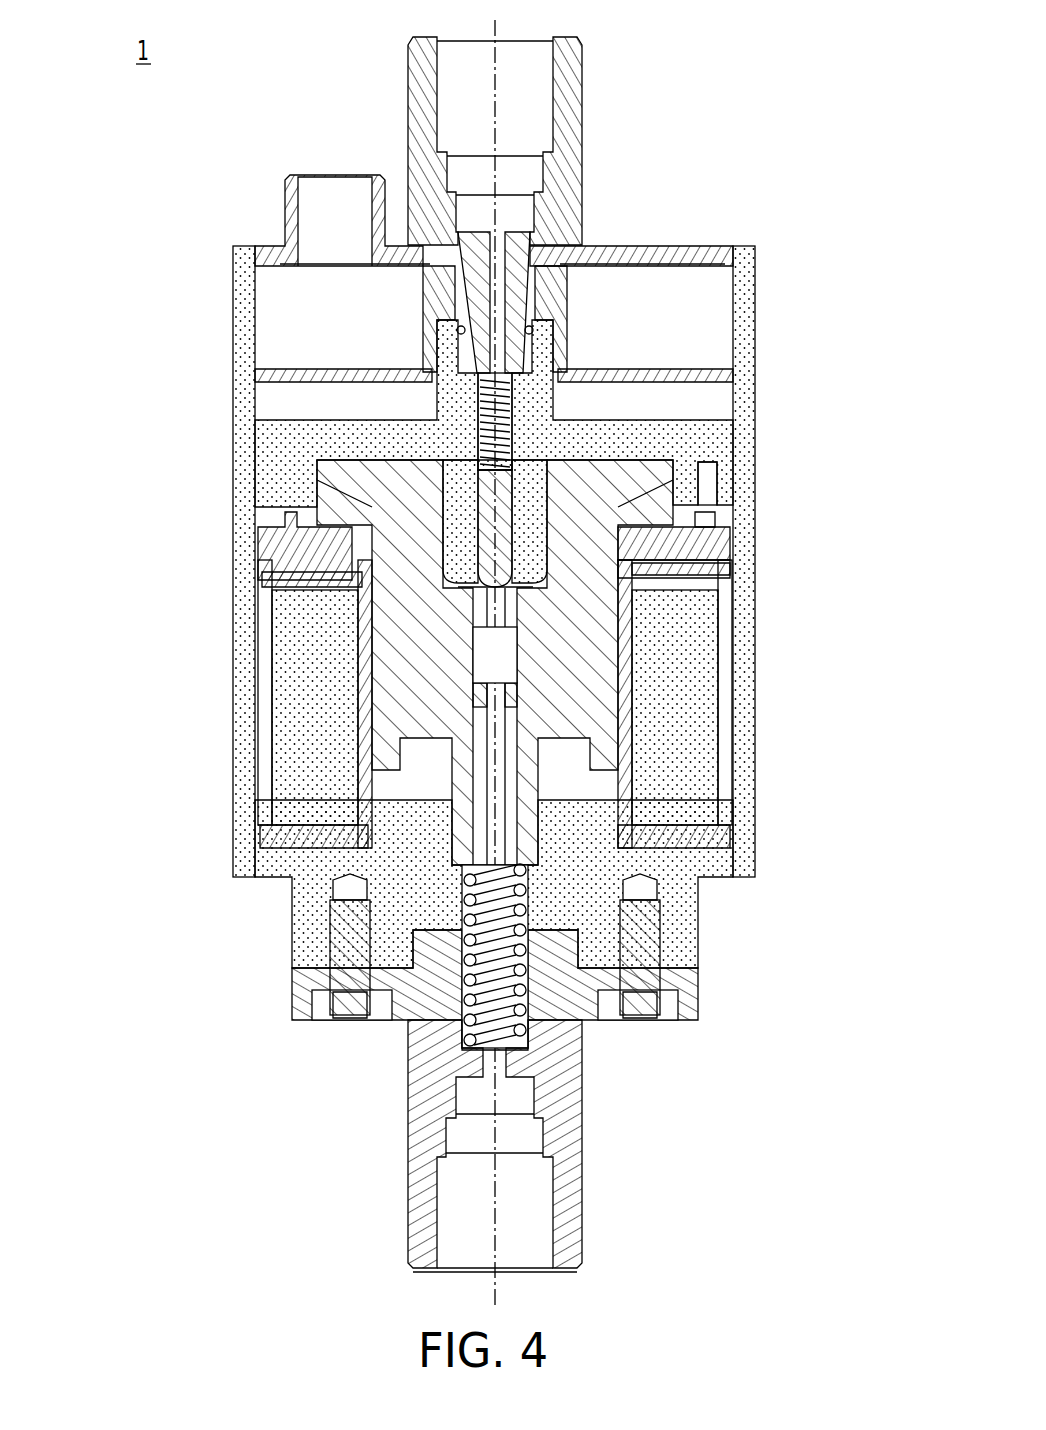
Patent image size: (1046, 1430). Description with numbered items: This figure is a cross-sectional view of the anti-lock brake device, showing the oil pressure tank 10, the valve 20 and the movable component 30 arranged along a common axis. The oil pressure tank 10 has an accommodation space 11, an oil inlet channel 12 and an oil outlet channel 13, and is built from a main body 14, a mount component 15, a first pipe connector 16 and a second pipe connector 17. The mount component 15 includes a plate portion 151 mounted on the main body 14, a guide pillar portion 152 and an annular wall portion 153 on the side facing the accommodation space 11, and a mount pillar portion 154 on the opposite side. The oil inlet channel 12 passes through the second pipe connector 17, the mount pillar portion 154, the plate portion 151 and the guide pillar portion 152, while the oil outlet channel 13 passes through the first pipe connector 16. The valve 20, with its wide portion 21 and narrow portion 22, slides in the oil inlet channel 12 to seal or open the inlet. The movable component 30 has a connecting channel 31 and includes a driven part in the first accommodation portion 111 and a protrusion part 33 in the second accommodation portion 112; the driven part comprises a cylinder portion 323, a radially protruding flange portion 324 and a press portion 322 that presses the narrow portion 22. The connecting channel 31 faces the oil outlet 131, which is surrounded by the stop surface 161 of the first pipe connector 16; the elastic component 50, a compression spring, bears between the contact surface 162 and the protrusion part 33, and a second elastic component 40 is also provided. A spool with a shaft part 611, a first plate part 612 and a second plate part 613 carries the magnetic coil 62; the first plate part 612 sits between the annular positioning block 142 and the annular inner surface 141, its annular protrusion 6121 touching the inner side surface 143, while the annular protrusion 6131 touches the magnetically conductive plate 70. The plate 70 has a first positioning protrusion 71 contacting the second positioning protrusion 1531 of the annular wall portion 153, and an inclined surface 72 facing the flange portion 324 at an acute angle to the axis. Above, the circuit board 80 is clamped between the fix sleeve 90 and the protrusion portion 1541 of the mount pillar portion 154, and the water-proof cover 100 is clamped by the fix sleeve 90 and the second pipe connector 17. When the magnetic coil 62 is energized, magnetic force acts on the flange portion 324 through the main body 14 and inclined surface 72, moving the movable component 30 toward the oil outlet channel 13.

The oil pressure tank 10 is at (760, 308).
The accommodation space 11 is at (735, 713).
The oil inlet channel 12 is at (488, 294).
The oil outlet channel 13 is at (507, 1093).
The main body 14 is at (748, 678).
The mount component 15 is at (160, 283).
The first pipe connector 16 is at (575, 1200).
The second pipe connector 17 is at (572, 100).
The valve 20 is at (172, 525).
The wide portion 21 is at (300, 552).
The narrow portion 22 is at (300, 595).
The movable component 30 is at (390, 780).
The connecting channel 31 is at (512, 657).
The protrusion part 33 is at (465, 868).
The elastic component 40 is at (478, 410).
The elastic component 50 is at (475, 1030).
The magnetic coil 62 is at (705, 730).
The magnetically conductive plate 70 is at (690, 543).
The first positioning protrusion 71 is at (705, 518).
The inclined surface 72 is at (650, 527).
The circuit board 80 is at (688, 372).
The fix sleeve 90 is at (562, 310).
The water-proof cover 100 is at (632, 246).
The first accommodation portion 111 is at (700, 470).
The second accommodation portion 112 is at (542, 886).
The oil outlet 131 is at (660, 950).
The annular inner surface 141 is at (709, 806).
The annular positioning block 142 is at (410, 800).
The inner side surface 143 is at (290, 845).
The plate portion 151 is at (297, 430).
The guide pillar portion 152 is at (430, 440).
The annular wall portion 153 is at (272, 472).
The mount pillar portion 154 is at (437, 340).
The stop surface 161 is at (455, 885).
The contact surface 162 is at (560, 985).
The press portion 322 is at (490, 605).
The cylinder portion 323 is at (605, 612).
The flange portion 324 is at (660, 497).
The shaft part 611 is at (625, 668).
The first plate part 612 is at (690, 835).
The second plate part 613 is at (690, 580).
The second positioning protrusion 1531 is at (680, 505).
The protrusion portion 1541 is at (556, 406).
The annular protrusion 6121 is at (640, 860).
The annular protrusion 6131 is at (662, 565).